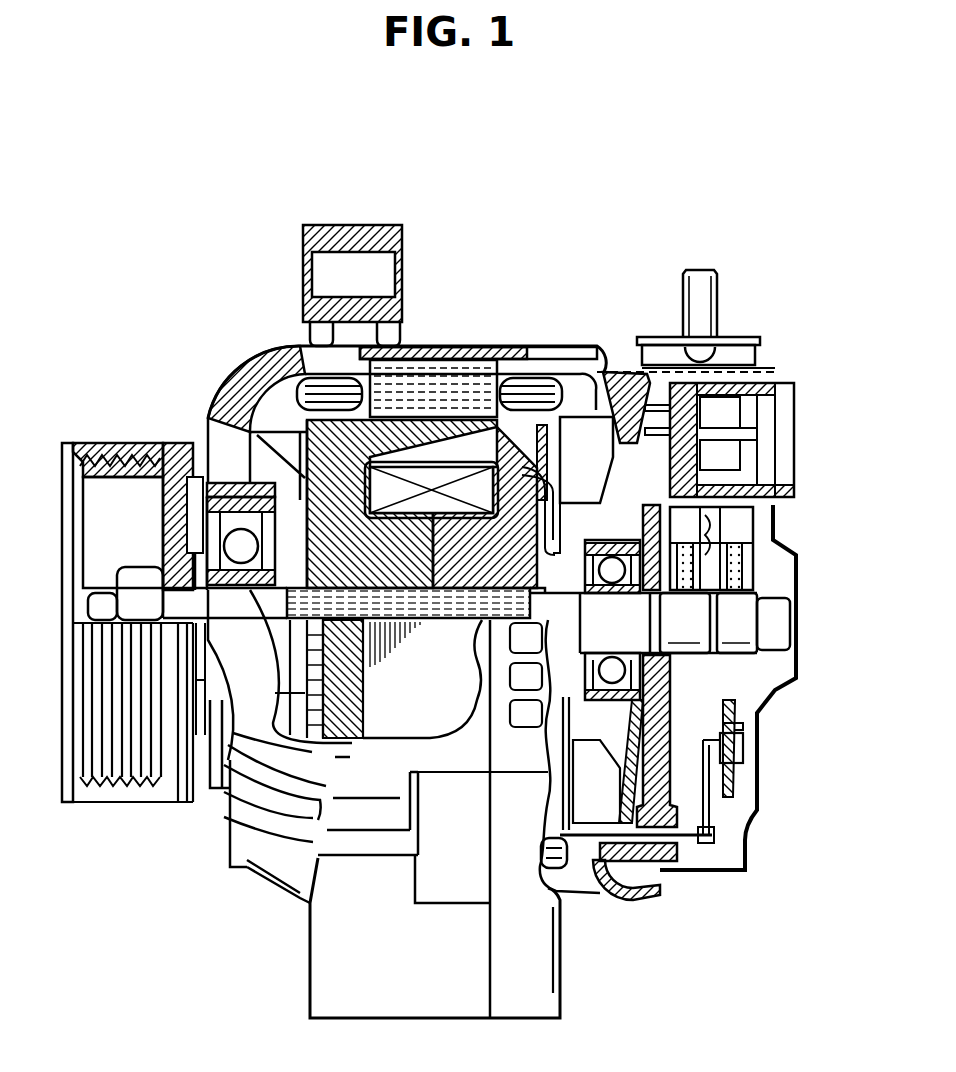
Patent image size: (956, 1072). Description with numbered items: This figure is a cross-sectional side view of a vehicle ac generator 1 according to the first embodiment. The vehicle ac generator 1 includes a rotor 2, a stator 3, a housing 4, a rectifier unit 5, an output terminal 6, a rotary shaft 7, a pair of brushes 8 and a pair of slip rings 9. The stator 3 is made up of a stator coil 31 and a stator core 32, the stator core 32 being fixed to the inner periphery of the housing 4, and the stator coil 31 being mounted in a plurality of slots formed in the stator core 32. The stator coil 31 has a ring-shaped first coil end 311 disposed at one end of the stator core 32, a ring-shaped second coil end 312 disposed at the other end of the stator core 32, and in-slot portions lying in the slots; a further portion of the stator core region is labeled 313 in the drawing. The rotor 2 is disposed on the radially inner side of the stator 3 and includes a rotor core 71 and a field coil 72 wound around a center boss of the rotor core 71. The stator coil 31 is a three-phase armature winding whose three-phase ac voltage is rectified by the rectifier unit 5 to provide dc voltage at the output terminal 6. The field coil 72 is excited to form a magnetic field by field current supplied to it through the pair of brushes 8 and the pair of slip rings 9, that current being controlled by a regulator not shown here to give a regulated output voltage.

The vehicle ac generator 1 is at (672, 188).
The rotor 2 is at (278, 413).
The stator 3 is at (541, 360).
The stator coil 31 is at (569, 360).
The first coil end 311 is at (314, 368).
The second coil end 312 is at (520, 377).
The stator core portion 313 is at (433, 397).
The stator core 32 is at (413, 367).
The housing 4 is at (437, 487).
The rectifier unit 5 is at (723, 747).
The output terminal 6 is at (694, 303).
The rotary shaft 7 is at (187, 603).
The rotor core 71 is at (332, 480).
The field coil 72 is at (440, 478).
The brushes 8 is at (687, 560).
The slip rings 9 is at (740, 608).